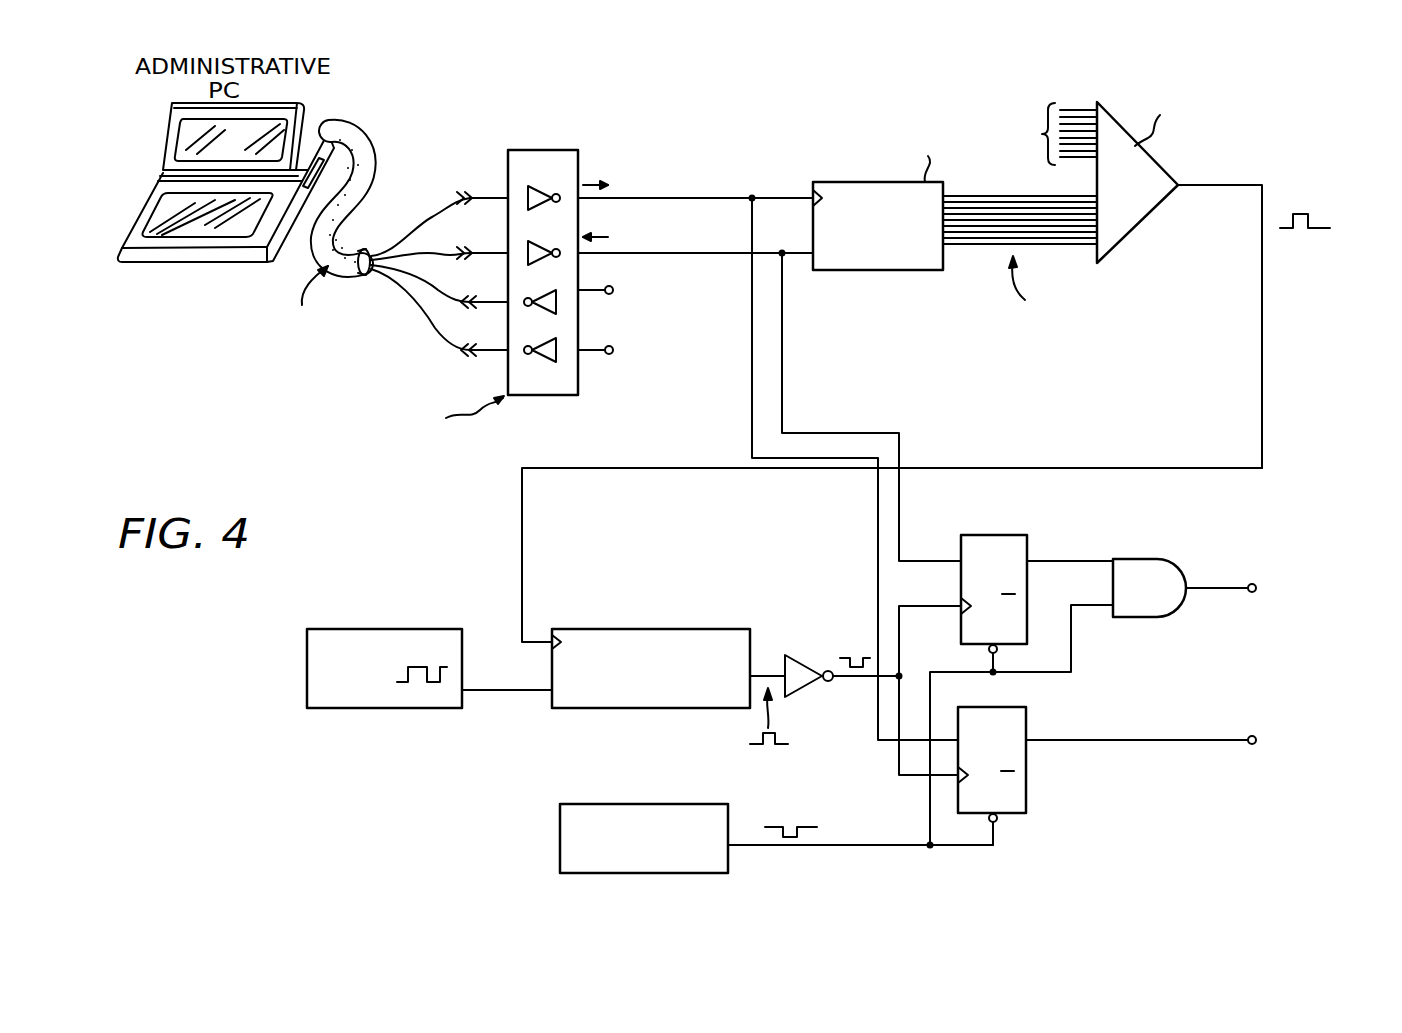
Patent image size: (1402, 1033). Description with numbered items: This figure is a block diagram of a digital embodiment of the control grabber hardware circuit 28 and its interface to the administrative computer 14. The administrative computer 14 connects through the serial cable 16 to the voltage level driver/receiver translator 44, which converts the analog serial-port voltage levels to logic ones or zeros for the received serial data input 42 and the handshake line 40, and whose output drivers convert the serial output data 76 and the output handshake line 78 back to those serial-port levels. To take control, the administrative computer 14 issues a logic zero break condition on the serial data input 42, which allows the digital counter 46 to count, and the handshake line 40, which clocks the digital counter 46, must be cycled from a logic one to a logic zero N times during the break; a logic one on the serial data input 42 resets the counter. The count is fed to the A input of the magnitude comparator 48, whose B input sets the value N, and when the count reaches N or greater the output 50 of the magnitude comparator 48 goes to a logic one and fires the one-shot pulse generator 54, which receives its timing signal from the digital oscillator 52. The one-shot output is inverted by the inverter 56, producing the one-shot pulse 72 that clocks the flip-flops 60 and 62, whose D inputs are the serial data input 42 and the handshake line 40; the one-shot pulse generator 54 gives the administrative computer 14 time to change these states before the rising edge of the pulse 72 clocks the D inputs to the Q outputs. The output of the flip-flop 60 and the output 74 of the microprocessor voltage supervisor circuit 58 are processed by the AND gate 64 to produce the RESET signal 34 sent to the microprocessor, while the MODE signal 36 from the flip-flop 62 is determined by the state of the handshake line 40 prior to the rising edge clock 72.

The administrative computer 14 is at (166, 148).
The serial cable 16 is at (356, 170).
The control grabber hardware circuit 28 is at (1315, 178).
The RESET signal 34 is at (1345, 578).
The MODE signal 36 is at (1207, 742).
The handshake line 40 is at (629, 194).
The serial data input 42 is at (632, 250).
The voltage level driver/receiver translator 44 is at (547, 396).
The digital counter 46 is at (846, 272).
The magnitude comparator 48 is at (1148, 215).
The output of magnitude comparator 50 is at (519, 548).
The digital oscillator 52 is at (350, 712).
The one-shot pulse generator 54 is at (625, 629).
The inverter 56 is at (785, 654).
The microprocessor voltage supervisor circuit 58 is at (560, 829).
The flip-flop 60 is at (1010, 535).
The flip-flop 62 is at (1027, 720).
The AND gate 64 is at (1160, 560).
The one-shot pulse 72 is at (843, 688).
The output of voltage supervisor circuit 74 is at (865, 853).
The serial output data 76 is at (641, 292).
The output handshake line 78 is at (641, 352).